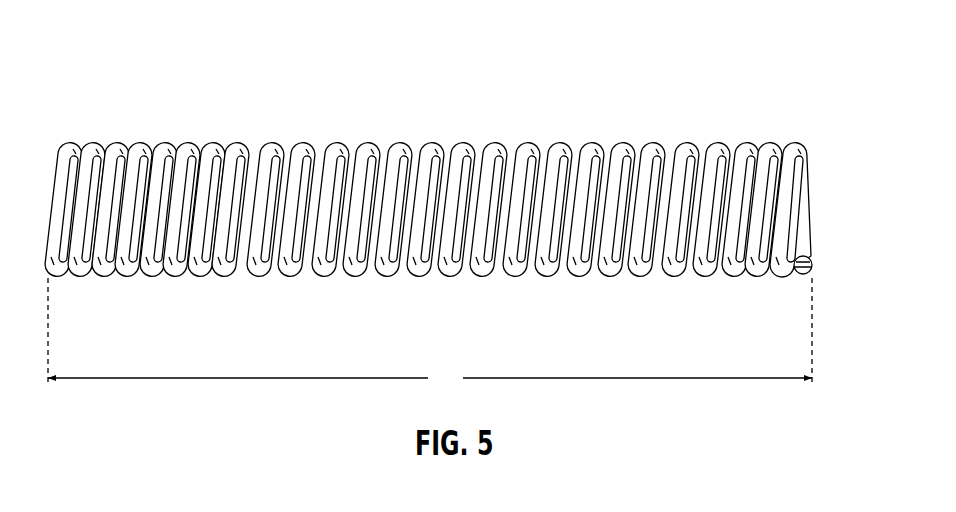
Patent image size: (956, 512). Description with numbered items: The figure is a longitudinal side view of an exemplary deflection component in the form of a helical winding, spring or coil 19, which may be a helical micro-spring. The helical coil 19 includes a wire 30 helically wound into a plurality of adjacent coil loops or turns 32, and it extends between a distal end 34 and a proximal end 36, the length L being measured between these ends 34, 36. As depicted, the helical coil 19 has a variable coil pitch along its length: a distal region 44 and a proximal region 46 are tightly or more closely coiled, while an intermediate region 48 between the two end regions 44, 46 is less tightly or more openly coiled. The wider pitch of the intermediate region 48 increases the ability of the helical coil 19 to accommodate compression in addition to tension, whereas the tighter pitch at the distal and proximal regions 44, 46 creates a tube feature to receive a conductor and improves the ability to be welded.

The helical coil 19 is at (412, 66).
The wire 30 is at (798, 276).
The coil loops or turns 32 is at (240, 142).
The distal end 34 is at (100, 50).
The proximal end 36 is at (805, 80).
The distal region 44 is at (130, 135).
The proximal region 46 is at (807, 130).
The intermediate region 48 is at (733, 285).